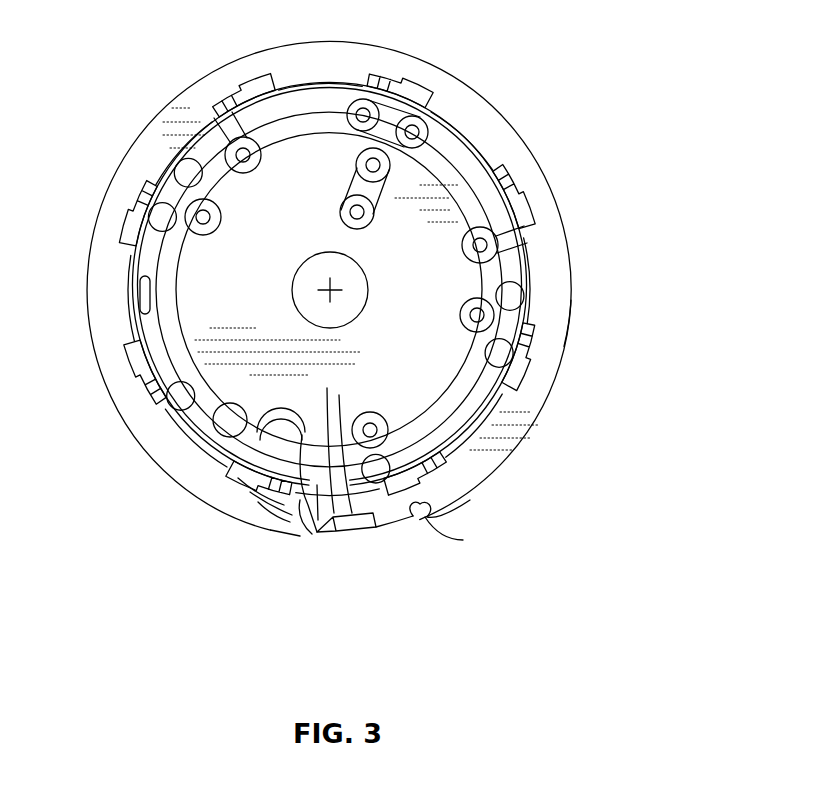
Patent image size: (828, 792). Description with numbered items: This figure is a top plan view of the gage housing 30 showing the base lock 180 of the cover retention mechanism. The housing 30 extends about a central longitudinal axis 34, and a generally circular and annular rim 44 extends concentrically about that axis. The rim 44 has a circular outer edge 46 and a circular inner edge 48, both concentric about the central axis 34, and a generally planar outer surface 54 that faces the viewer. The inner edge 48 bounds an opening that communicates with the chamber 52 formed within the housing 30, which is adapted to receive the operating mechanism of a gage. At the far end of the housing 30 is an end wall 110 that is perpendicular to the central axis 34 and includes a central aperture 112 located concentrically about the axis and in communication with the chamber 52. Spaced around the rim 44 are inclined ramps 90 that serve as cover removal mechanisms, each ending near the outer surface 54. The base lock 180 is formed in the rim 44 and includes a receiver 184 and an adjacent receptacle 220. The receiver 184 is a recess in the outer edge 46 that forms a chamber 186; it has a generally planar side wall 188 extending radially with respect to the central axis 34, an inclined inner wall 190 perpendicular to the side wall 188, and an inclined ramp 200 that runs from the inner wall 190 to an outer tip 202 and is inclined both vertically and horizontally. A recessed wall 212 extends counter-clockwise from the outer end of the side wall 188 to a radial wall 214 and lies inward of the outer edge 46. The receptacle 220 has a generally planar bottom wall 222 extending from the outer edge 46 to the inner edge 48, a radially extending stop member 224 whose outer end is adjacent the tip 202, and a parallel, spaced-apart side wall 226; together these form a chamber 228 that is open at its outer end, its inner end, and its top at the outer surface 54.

The housing 30 is at (558, 84).
The central longitudinal axis 34 is at (345, 270).
The rim 44 is at (570, 234).
The outer edge 46 is at (571, 312).
The inner edge 48 is at (495, 262).
The chamber 52 is at (222, 258).
The outer surface 54 is at (557, 286).
The inclined ramp 90 is at (397, 78).
The end wall 110 is at (258, 192).
The central aperture 112 is at (366, 310).
The base lock 180 is at (396, 586).
The receiver 184 is at (350, 533).
The chamber 186 is at (312, 533).
The side wall 188 is at (368, 528).
The inclined inner wall 190 is at (343, 412).
The inclined ramp 200 is at (340, 398).
The outer tip 202 is at (330, 528).
The recessed wall 212 is at (425, 532).
The radial wall 214 is at (432, 518).
The receptacle 220 is at (288, 525).
The bottom wall 222 is at (280, 512).
The stop member 224 is at (288, 410).
The side wall 226 is at (275, 520).
The chamber 228 is at (270, 500).